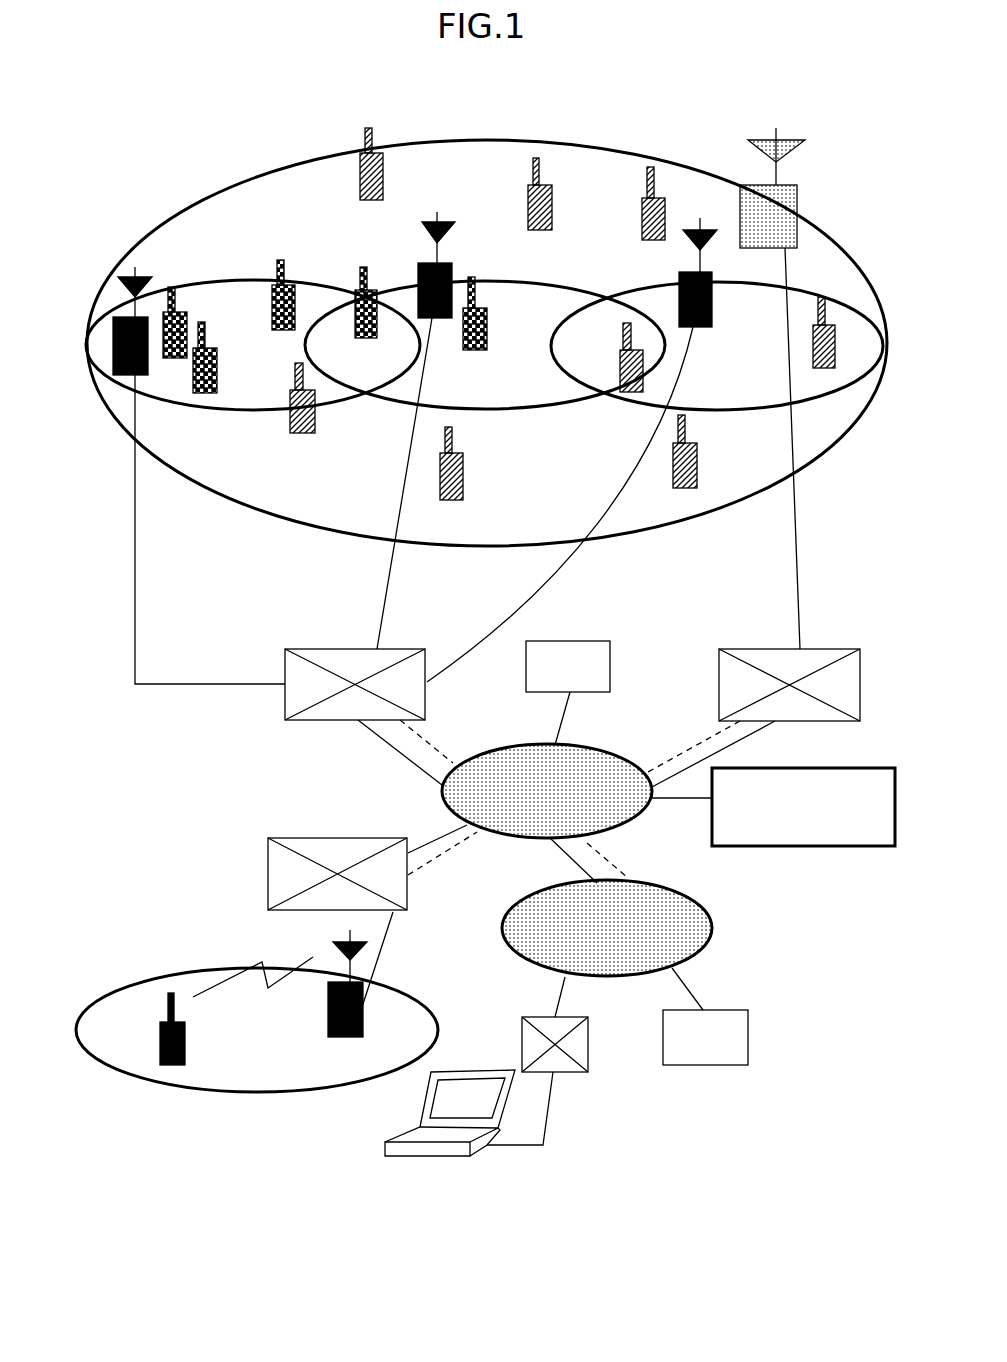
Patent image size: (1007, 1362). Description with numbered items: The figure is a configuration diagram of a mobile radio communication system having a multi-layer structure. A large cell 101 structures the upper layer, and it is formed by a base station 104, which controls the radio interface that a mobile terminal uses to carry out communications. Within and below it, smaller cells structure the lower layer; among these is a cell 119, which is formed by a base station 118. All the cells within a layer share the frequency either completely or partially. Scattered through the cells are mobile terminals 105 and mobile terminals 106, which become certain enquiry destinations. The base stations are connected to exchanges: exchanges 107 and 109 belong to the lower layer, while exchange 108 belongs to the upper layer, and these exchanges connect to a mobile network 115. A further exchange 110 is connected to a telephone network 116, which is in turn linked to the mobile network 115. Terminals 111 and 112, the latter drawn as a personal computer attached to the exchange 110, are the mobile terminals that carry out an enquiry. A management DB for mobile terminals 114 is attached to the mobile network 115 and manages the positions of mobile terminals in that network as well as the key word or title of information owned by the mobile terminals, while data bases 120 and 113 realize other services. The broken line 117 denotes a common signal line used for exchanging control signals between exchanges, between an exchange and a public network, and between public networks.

The cell 101 is at (590, 148).
The base station 104 is at (800, 200).
The mobile terminal 105 is at (293, 295).
The mobile terminal 106 is at (386, 164).
The exchange 107 is at (398, 648).
The exchange 108 is at (830, 649).
The exchange 109 is at (268, 870).
The exchange 110 is at (572, 1073).
The terminal 111 is at (172, 1065).
The terminal 112 is at (428, 1155).
The data base 113 is at (748, 1035).
The management DB for mobile terminals 114 is at (808, 846).
The mobile network 115 is at (620, 752).
The telephone network 116 is at (508, 950).
The common signal line 117 is at (452, 763).
The base station 118 is at (330, 1007).
The cell 119 is at (258, 1093).
The data base 120 is at (585, 641).